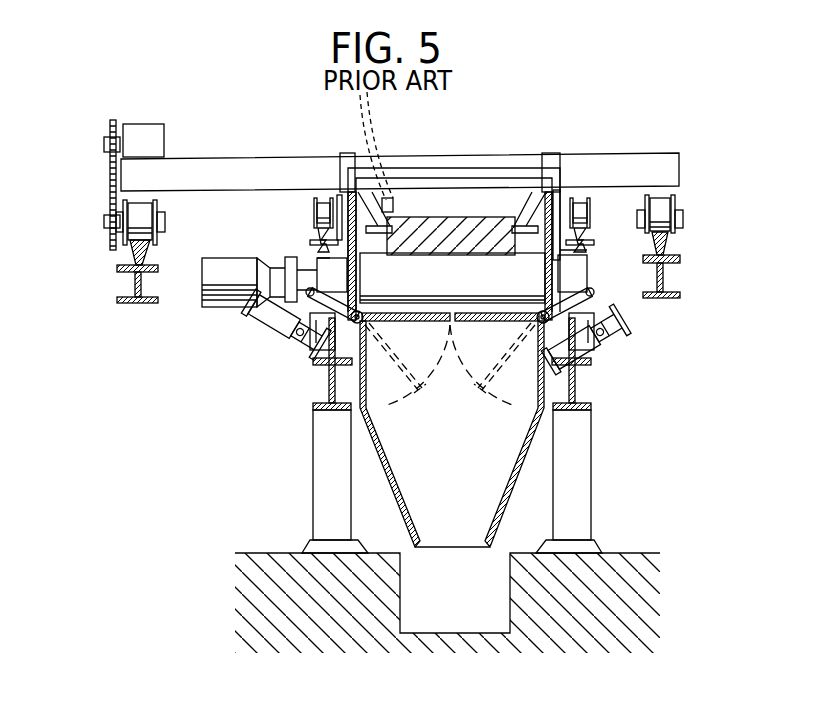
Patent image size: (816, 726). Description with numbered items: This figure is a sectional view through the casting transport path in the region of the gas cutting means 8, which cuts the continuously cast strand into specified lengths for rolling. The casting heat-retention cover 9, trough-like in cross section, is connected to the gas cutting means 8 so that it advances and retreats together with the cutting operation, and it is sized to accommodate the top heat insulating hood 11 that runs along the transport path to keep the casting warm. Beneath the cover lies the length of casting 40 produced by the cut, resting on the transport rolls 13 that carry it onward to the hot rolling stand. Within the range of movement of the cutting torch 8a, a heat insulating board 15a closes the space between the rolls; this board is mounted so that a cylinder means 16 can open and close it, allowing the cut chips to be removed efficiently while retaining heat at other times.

The gas cutting means 8 is at (428, 156).
The cutting torch 8a is at (395, 206).
The casting heat-retention cover 9 is at (486, 170).
The top heat insulating hood 11 is at (520, 195).
The transport rolls 13 is at (498, 284).
The heat insulating board 15a is at (480, 321).
The cylinder means 16 is at (275, 353).
The length of casting 40 is at (460, 248).